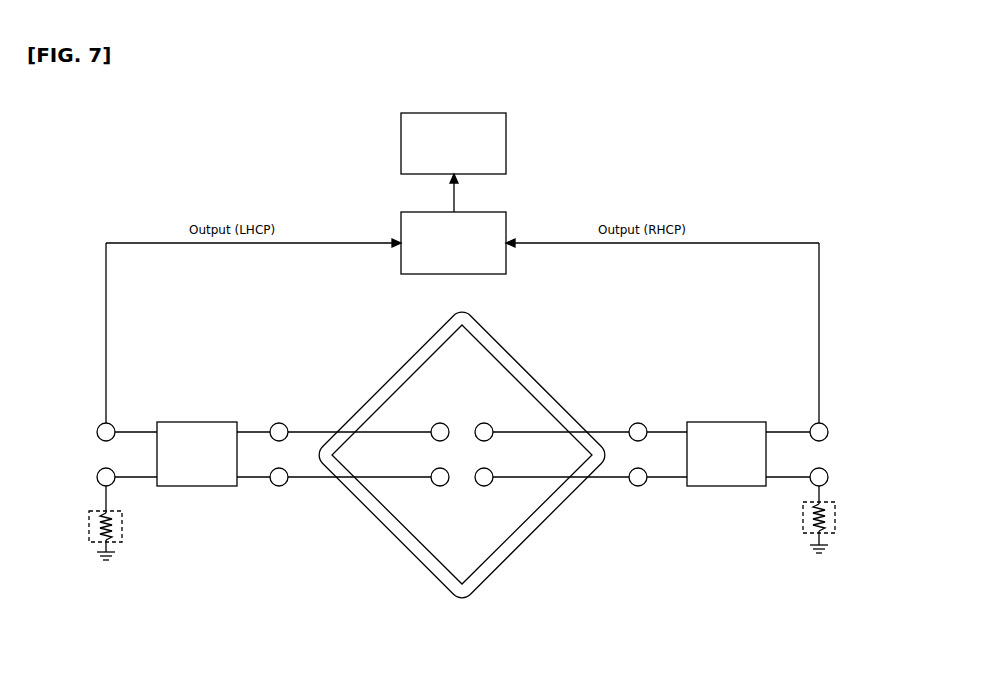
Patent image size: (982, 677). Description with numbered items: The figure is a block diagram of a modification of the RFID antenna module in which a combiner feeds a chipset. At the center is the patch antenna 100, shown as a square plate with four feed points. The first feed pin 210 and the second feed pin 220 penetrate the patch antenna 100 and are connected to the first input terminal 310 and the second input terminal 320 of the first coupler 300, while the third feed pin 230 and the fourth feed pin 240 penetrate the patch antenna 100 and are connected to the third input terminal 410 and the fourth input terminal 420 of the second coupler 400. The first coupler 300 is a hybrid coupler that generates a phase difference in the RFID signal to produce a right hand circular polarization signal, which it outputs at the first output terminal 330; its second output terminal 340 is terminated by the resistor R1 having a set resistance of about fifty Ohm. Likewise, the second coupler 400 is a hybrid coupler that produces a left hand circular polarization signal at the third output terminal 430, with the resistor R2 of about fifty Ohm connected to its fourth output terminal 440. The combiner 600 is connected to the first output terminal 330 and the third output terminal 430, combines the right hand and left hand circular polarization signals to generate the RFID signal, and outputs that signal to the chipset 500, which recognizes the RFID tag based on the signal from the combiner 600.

The patch antenna 100 is at (426, 346).
The first feed pin 210 is at (491, 426).
The second feed pin 220 is at (491, 484).
The third feed pin 230 is at (433, 483).
The fourth feed pin 240 is at (433, 426).
The first coupler 300 is at (724, 422).
The first input terminal 310 is at (638, 423).
The second input terminal 320 is at (638, 486).
The first output terminal 330 is at (829, 432).
The second output terminal 340 is at (829, 477).
The second coupler 400 is at (197, 422).
The third input terminal 410 is at (279, 486).
The fourth input terminal 420 is at (279, 423).
The third output terminal 430 is at (97, 432).
The fourth output terminal 440 is at (97, 477).
The chipset 500 is at (506, 143).
The combiner 600 is at (506, 268).
The resistor R1 is at (838, 513).
The resistor R2 is at (88, 522).